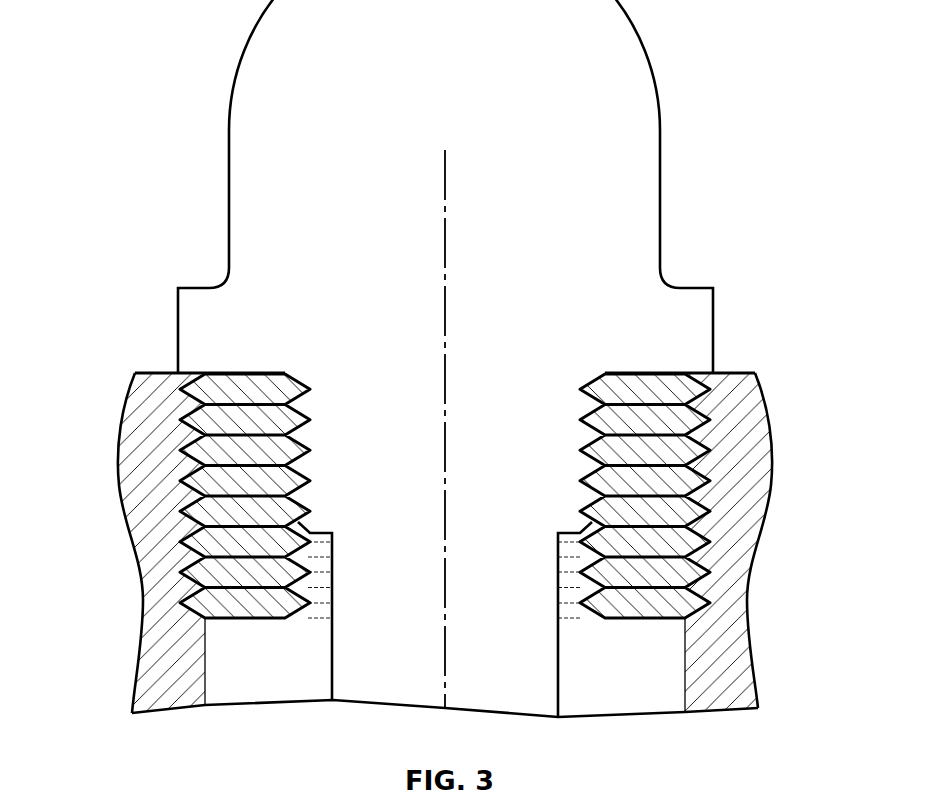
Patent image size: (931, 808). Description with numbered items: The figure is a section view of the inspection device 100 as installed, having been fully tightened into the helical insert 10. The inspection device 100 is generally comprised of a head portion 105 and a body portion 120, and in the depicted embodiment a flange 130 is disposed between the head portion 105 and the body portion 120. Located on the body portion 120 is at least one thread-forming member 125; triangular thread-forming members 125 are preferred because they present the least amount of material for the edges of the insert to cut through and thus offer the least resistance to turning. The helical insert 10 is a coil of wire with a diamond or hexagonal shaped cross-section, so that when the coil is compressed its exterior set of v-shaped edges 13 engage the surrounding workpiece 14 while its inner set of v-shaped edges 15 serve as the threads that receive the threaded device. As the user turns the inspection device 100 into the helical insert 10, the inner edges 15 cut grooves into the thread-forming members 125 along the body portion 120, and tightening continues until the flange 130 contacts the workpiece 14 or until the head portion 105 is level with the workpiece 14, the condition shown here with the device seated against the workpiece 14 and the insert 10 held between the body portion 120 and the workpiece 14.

The inspection device 100 is at (465, 404).
The head portion 105 is at (630, 108).
The flange 130 is at (703, 330).
The thread-forming member 125 is at (198, 407).
The workpiece 14 is at (137, 516).
The exterior set of v-shaped edges 13 is at (190, 568).
The inner set of v-shaped edges 15 is at (295, 610).
The body portion 120 is at (412, 667).
The helical insert 10 is at (640, 612).